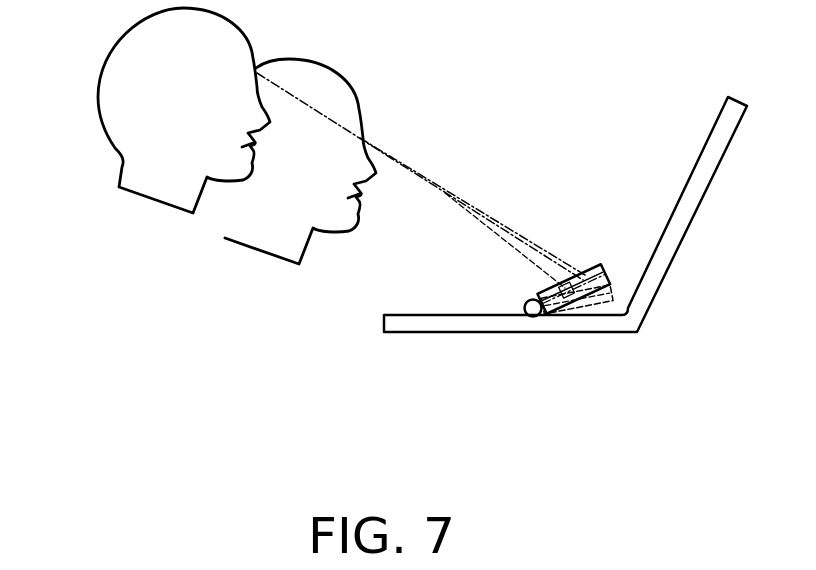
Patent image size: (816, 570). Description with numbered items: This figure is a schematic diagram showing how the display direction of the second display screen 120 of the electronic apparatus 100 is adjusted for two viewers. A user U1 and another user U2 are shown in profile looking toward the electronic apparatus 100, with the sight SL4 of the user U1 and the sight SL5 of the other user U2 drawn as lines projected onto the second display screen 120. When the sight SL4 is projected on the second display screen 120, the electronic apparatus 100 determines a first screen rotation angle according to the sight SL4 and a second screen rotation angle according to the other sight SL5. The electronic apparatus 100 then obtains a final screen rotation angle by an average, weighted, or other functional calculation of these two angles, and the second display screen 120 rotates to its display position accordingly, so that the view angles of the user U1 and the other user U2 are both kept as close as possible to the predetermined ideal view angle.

The another user U2 is at (109, 55).
The user U1 is at (327, 67).
The sight SL4 is at (383, 190).
The another sight SL5 is at (472, 206).
The electronic apparatus 100 is at (728, 120).
The second display screen 120 is at (612, 285).